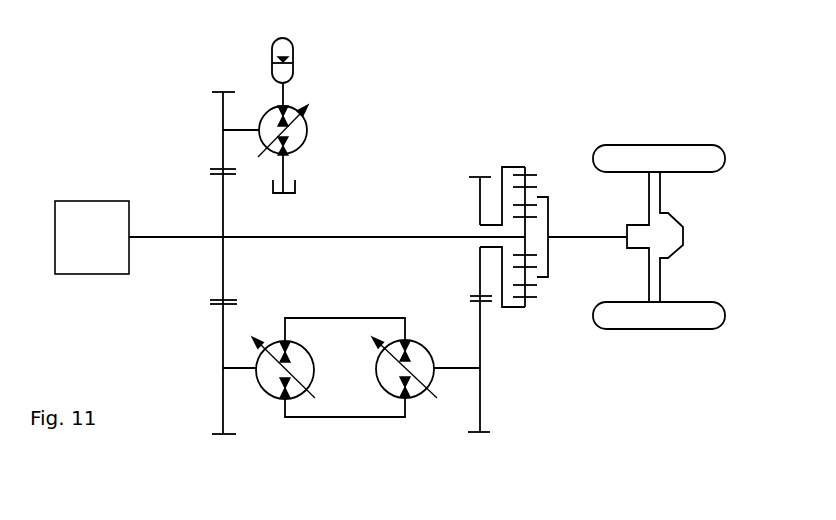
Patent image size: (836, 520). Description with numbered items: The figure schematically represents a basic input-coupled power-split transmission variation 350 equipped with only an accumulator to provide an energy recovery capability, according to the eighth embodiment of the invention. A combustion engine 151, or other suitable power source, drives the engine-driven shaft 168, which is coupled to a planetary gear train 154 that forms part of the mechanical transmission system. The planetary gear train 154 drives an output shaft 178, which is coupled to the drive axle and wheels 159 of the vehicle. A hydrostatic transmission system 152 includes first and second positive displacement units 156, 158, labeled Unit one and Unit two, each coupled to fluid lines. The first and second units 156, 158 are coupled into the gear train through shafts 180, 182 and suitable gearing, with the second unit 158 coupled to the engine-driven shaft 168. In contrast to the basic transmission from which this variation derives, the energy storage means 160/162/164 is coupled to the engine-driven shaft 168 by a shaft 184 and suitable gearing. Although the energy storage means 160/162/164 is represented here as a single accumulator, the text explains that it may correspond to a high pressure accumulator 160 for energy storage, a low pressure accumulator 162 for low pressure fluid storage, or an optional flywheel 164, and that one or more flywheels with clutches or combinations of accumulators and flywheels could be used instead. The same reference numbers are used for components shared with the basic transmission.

The combustion engine 151 is at (65, 260).
The hydrostatic transmission system 152 is at (333, 388).
The planetary gear train 154 is at (439, 155).
The first positive displacement unit 156 is at (272, 338).
The second positive displacement unit 158 is at (415, 338).
The drive axle and wheels 159 is at (741, 226).
The high pressure accumulator 160 is at (339, 105).
The low pressure accumulator 162 is at (283, 131).
The flywheel 164 is at (282, 72).
The shaft 168 is at (187, 237).
The shaft 178 is at (572, 238).
The shaft 180 is at (243, 367).
The shaft 182 is at (460, 369).
The shaft 184 is at (248, 120).
The basic variation of PSD transmission 350 is at (555, 90).